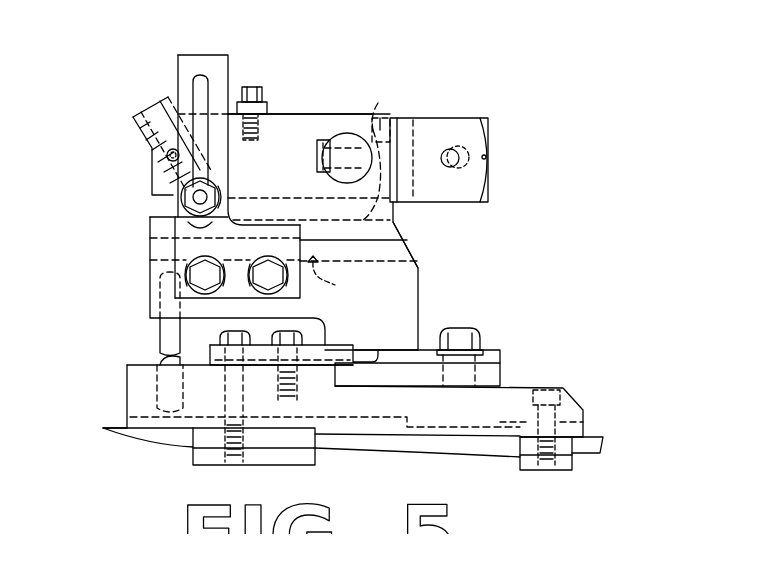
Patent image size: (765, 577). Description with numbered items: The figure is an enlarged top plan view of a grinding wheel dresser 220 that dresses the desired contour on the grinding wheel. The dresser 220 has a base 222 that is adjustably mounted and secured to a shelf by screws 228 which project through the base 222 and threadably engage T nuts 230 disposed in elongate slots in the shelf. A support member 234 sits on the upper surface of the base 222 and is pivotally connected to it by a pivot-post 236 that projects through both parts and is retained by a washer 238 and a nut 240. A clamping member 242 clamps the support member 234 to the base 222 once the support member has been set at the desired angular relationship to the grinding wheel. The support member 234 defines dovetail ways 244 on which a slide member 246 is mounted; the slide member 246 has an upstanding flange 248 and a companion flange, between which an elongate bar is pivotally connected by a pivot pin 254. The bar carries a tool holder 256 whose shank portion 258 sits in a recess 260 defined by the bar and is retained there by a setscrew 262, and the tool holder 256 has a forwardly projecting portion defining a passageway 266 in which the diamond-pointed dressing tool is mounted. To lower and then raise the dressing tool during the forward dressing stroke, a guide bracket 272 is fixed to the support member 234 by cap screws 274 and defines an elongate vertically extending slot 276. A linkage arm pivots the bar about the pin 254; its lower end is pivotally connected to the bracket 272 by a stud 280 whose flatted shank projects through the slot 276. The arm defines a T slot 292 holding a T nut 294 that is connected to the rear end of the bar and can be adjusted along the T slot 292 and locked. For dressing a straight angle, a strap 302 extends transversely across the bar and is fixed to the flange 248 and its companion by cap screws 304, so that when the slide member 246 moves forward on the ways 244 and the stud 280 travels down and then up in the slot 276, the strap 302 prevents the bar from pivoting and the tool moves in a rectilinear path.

The wheel dresser 220 is at (141, 283).
The base 222 is at (138, 390).
The screws 228 is at (540, 390).
The T nuts 230 is at (587, 420).
The support member 234 is at (412, 274).
The pivot-post 236 is at (467, 330).
The washer 238 is at (486, 353).
The nut 240 is at (483, 333).
The clamping member 242 is at (333, 350).
The dovetail ways 244 is at (347, 278).
The slide member 246 is at (403, 233).
The upstanding flange 248 is at (293, 123).
The pivot pin 254 is at (333, 158).
The tool holder 256 is at (455, 128).
The shank portion 258 is at (368, 135).
The recess 260 is at (371, 200).
The setscrew 262 is at (396, 120).
The passageway 266 is at (452, 163).
The guide bracket 272 is at (175, 223).
The cap screws 274 is at (197, 280).
The slot 276 is at (195, 82).
The stud 280 is at (193, 202).
The T slot 292 is at (146, 104).
The T nut 294 is at (160, 150).
The strap 302 is at (268, 107).
The cap screws 304 is at (250, 87).